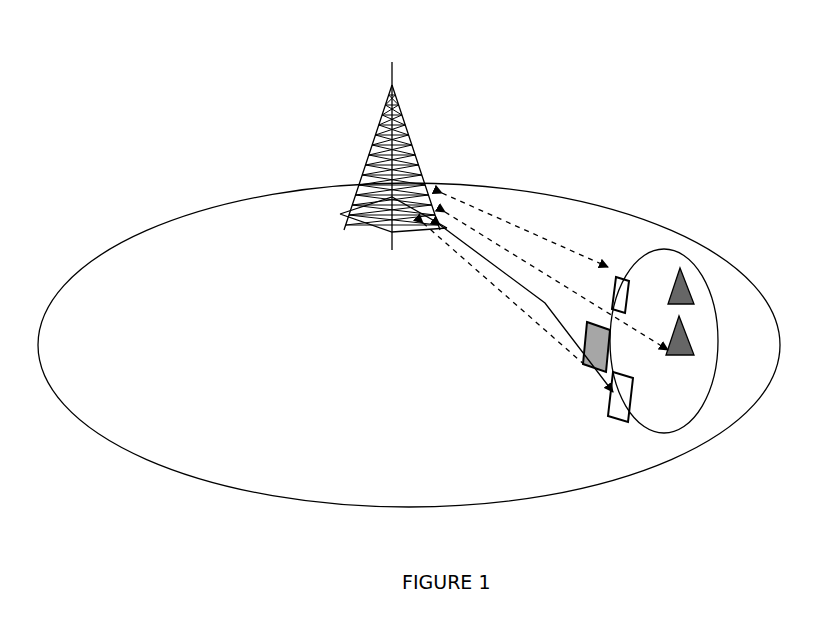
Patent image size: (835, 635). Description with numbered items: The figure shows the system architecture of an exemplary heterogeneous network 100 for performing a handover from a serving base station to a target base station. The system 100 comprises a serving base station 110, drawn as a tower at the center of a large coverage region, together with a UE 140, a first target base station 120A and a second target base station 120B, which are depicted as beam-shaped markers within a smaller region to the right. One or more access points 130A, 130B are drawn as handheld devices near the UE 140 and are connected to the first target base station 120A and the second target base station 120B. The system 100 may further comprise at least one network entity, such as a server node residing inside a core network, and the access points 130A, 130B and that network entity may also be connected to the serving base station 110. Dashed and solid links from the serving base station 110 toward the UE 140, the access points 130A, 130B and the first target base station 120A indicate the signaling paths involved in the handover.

The heterogeneous network 100 is at (602, 59).
The serving base station 110 is at (428, 176).
The first target base station 120A is at (696, 350).
The second target base station 120B is at (686, 282).
The access point 130A is at (604, 290).
The access point 130B is at (610, 402).
The UE 140 is at (582, 356).